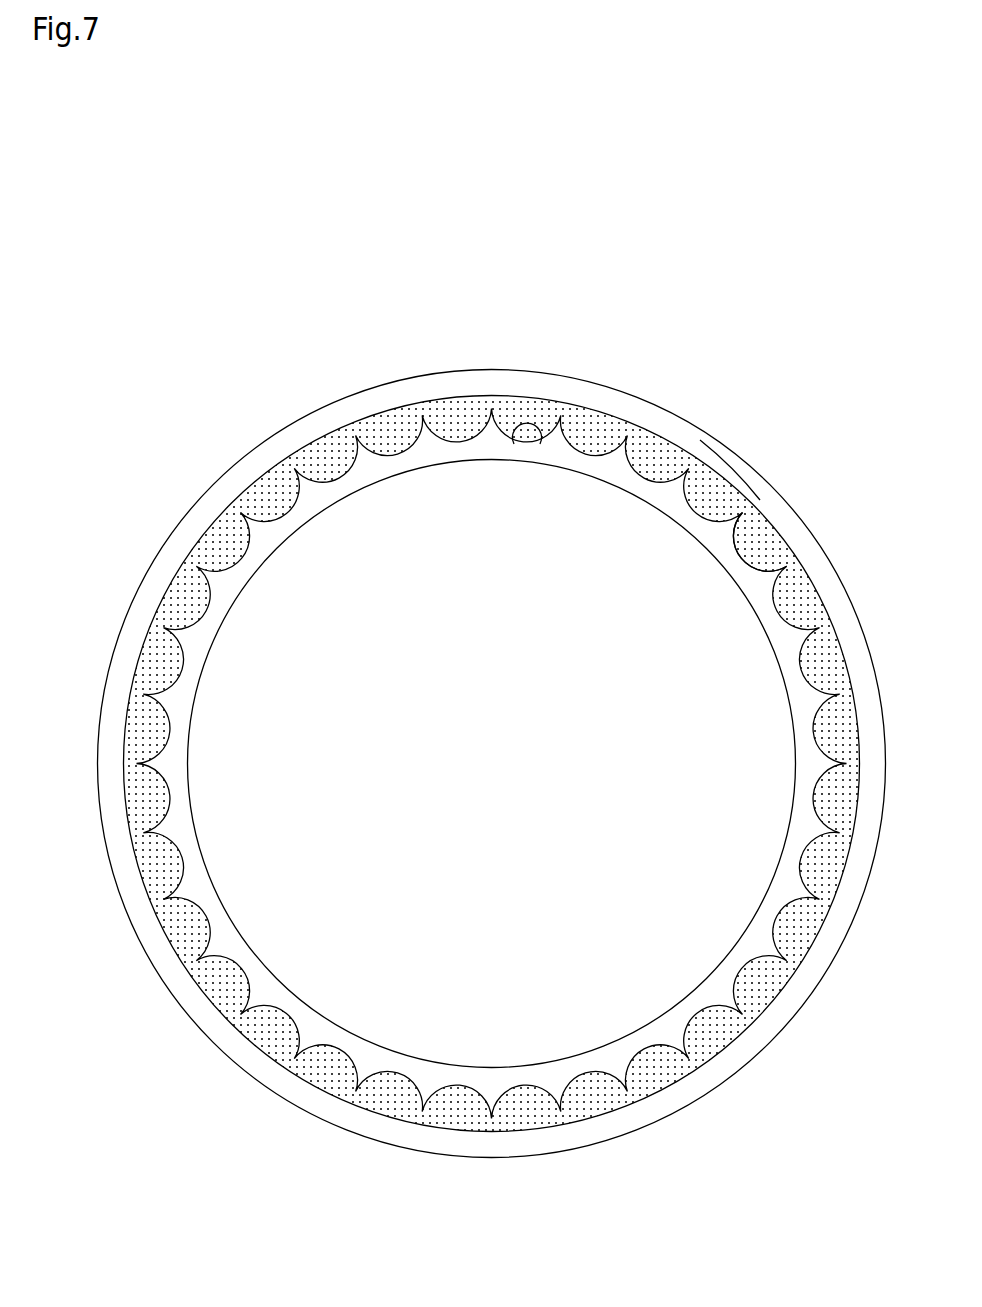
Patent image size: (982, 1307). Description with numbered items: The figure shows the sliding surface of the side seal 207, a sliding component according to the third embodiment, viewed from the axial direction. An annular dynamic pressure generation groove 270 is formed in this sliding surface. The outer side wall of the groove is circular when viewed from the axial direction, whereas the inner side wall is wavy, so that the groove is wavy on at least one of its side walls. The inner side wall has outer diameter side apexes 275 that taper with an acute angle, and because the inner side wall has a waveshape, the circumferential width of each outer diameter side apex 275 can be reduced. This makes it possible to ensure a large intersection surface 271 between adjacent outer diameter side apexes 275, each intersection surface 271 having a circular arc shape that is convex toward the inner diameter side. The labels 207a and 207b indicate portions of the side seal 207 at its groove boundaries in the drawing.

The side seal 207 is at (711, 392).
The inner peripheral surface 207a is at (754, 542).
The outer peripheral surface 207b is at (719, 494).
The dynamic pressure generation groove 270 is at (310, 431).
The intersection surface 271 is at (514, 446).
The outer diameter side apex 275 is at (576, 446).